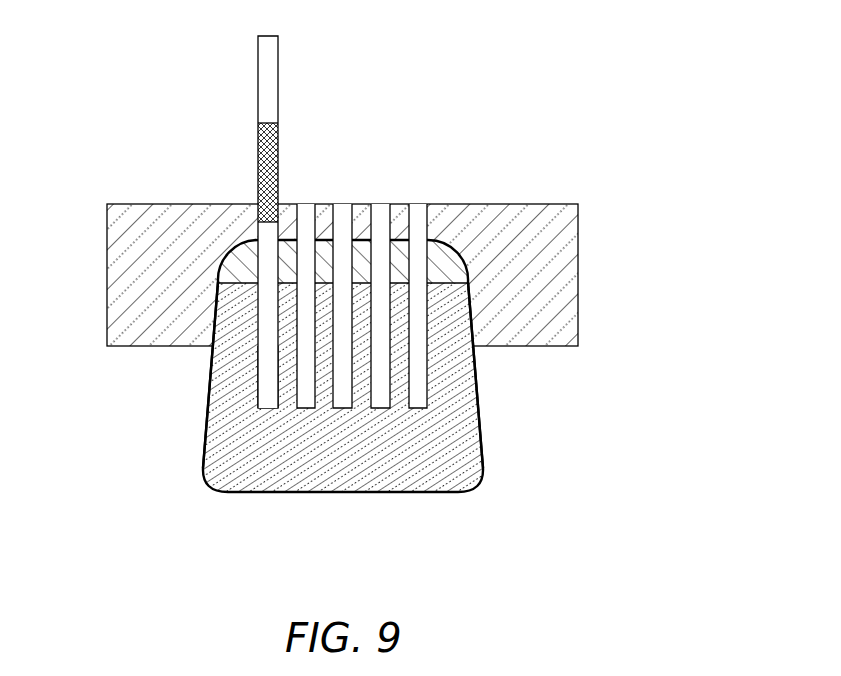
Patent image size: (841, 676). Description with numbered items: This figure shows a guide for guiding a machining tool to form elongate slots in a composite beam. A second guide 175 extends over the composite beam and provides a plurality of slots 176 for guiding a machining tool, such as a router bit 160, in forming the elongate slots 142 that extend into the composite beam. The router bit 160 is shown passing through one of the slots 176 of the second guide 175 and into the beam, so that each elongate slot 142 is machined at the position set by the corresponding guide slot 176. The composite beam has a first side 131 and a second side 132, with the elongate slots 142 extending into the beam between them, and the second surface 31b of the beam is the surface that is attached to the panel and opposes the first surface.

The router bit 160 is at (265, 97).
The slots 176 is at (307, 217).
The second guide 175 is at (537, 237).
The first side 131 is at (212, 383).
The second side 132 is at (478, 368).
The elongate slots 142 is at (263, 393).
The second surface 31b is at (405, 490).